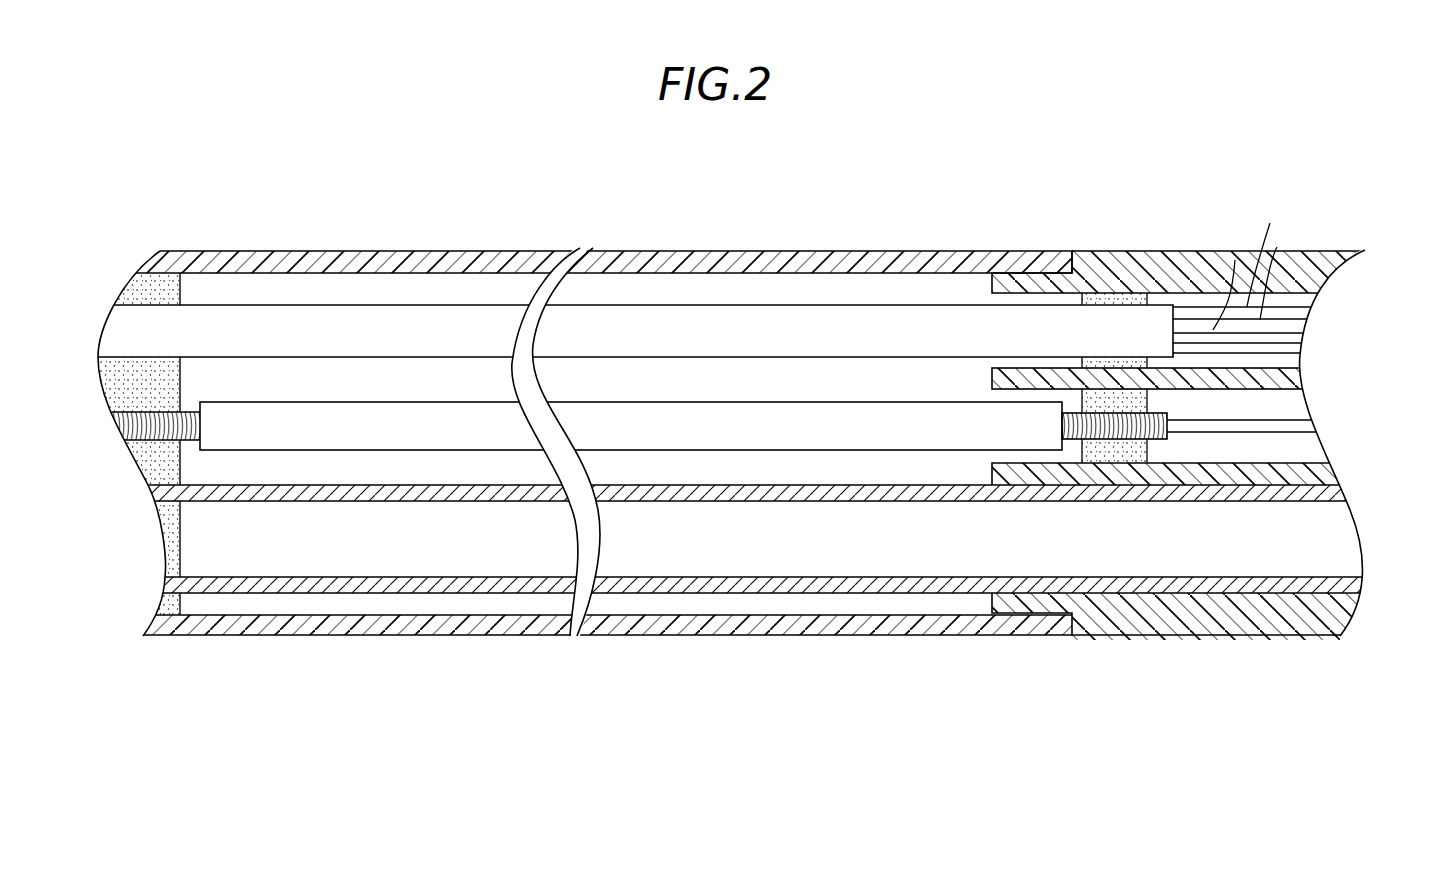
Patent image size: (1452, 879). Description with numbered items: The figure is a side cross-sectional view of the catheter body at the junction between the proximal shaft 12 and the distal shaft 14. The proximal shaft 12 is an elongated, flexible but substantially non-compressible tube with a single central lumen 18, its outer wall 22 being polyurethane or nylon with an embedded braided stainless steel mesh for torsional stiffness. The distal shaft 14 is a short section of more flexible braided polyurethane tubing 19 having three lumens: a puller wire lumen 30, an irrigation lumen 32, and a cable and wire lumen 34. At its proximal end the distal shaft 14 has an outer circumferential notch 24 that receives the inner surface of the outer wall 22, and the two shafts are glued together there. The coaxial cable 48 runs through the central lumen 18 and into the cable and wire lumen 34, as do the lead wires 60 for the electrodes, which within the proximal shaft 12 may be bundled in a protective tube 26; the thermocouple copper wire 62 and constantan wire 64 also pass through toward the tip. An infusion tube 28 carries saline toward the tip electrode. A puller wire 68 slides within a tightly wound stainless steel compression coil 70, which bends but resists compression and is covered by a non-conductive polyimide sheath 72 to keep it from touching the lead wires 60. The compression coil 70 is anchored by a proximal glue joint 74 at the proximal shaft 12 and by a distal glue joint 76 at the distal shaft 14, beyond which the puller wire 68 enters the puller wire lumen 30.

The proximal shaft 12 is at (628, 656).
The distal shaft 14 is at (1186, 674).
The central lumen 18 is at (890, 463).
The flexible tubing 19 is at (1217, 257).
The outer wall 22 is at (789, 260).
The outer circumferential notch 24 is at (1065, 261).
The protective tube 26 is at (673, 327).
The infusion tube 28 is at (1345, 490).
The puller wire lumen 30 is at (1290, 444).
The irrigation lumen 32 is at (1366, 588).
The cable and wire lumen 34 is at (1290, 302).
The coaxial cable 48 is at (1235, 260).
The lead wires 60 is at (1270, 223).
The copper wire 62 is at (1290, 338).
The constantan wire 64 is at (1290, 343).
The puller wire 68 is at (1283, 427).
The compression coil 70 is at (142, 428).
The non-conductive sheath 72 is at (782, 432).
The proximal glue joint 74 is at (183, 602).
The distal glue joint 76 is at (1115, 455).